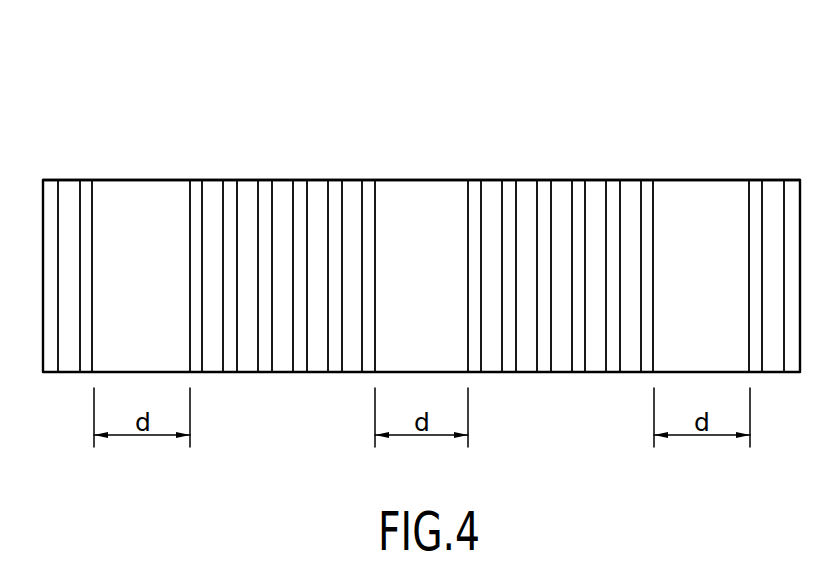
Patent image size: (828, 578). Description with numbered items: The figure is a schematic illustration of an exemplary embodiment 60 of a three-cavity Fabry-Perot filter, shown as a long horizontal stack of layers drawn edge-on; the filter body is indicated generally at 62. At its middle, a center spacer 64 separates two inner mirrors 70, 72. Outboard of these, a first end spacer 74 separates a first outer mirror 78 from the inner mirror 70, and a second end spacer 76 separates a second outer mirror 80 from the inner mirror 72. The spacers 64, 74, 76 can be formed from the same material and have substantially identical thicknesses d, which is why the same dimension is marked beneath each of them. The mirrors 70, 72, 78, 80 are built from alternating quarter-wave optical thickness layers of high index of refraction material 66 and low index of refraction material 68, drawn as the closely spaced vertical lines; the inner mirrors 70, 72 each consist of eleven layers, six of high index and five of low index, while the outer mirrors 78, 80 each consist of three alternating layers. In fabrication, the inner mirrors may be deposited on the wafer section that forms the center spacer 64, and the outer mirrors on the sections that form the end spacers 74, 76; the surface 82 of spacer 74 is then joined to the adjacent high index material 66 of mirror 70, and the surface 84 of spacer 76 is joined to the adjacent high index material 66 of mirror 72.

The three-cavity Fabry-Perot filter 60 is at (408, 62).
The substrate 62 is at (408, 162).
The center spacer 64 is at (430, 281).
The high index of refraction material layer 66 is at (85, 180).
The low index of refraction material layer 68 is at (65, 373).
The first inner mirror 70 is at (190, 463).
The second inner mirror 72 is at (653, 463).
The first end spacer 74 is at (152, 281).
The second end spacer 76 is at (705, 281).
The first outer mirror 78 is at (94, 463).
The second outer mirror 80 is at (750, 463).
The surface of spacer 74 82 is at (188, 228).
The surface of spacer 76 84 is at (653, 238).